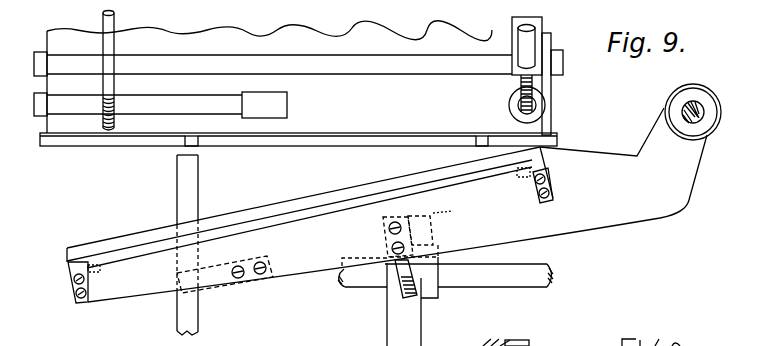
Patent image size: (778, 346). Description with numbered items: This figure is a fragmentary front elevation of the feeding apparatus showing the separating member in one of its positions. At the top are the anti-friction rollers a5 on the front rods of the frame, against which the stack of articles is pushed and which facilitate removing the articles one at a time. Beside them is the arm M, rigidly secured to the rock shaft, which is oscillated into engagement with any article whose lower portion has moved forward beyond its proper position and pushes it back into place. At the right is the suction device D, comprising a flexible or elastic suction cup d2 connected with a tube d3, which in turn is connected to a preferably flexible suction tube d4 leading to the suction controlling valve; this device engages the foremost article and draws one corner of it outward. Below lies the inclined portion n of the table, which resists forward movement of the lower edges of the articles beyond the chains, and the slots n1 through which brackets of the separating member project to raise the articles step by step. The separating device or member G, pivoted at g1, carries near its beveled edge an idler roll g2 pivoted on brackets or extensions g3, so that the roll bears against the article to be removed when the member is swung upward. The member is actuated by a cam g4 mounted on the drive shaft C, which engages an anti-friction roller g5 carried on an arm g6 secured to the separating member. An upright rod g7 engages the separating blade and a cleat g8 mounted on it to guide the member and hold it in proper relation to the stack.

The arm M is at (111, 42).
The anti-friction rollers a5 is at (250, 60).
The inclined portion n is at (112, 146).
The slots n1 is at (199, 146).
The suction tube d4 is at (520, 42).
The suction device D is at (510, 99).
The tube d3 is at (536, 84).
The suction cup d2 is at (513, 112).
The pivot g1 is at (683, 109).
The idler roll g2 is at (341, 207).
The brackets or extensions g3 is at (69, 279).
The cam g4 is at (386, 320).
The anti-friction roller g5 is at (440, 219).
The arm g6 is at (410, 268).
The upright rod g7 is at (186, 306).
The cleat g8 is at (205, 292).
The separating device or member G is at (397, 205).
The drive shaft C is at (550, 270).